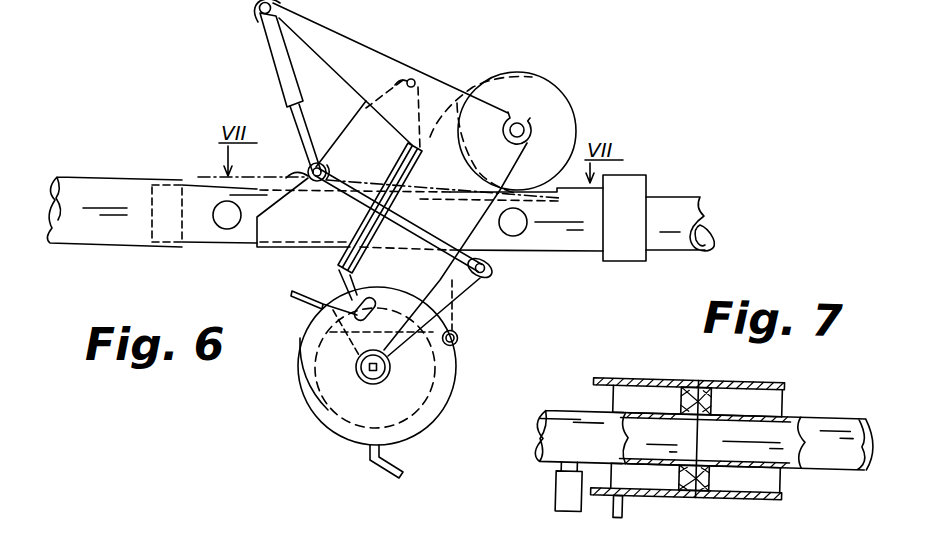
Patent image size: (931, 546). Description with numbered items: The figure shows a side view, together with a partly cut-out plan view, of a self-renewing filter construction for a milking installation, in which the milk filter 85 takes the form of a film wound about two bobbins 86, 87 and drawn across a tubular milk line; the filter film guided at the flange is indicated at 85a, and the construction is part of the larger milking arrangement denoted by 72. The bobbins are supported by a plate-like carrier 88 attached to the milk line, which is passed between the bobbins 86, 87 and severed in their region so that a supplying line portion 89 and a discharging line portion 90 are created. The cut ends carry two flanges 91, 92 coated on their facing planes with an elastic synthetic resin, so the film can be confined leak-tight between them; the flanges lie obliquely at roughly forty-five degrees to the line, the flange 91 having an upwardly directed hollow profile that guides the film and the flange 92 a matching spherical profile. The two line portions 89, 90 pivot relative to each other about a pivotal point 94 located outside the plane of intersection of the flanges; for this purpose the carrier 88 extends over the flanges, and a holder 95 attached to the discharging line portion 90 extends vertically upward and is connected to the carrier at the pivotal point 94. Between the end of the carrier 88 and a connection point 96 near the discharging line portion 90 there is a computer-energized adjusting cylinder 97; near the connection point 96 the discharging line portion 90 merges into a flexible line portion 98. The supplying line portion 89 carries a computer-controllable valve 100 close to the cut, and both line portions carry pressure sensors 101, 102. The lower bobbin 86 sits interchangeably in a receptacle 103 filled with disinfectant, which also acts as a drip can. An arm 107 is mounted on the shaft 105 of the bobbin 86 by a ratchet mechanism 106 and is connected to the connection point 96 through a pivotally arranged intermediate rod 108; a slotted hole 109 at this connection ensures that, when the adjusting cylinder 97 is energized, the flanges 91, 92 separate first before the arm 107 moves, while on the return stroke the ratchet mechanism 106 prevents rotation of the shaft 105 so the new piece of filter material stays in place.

In FIG. 6, the frame member 72 is at (496, 5).
In FIG. 6, the milk filter 85 is at (420, 45).
In FIG. 6, the hook 85a is at (528, 74).
In FIG. 6, the lower bobbin 86 is at (313, 422).
In FIG. 6, the bobbin 87 is at (558, 92).
In FIG. 6, the plate-like carrier 88 is at (458, 92).
In FIG. 7, the plate-like carrier 88 is at (757, 495).
In FIG. 6, the supplying milk line portion 89 is at (708, 205).
In FIG. 7, the supplying milk line portion 89 is at (849, 412).
In FIG. 6, the discharging line portion 90 is at (200, 178).
In FIG. 7, the discharging line portion 90 is at (566, 412).
In FIG. 6, the flange 91 is at (360, 275).
In FIG. 7, the flange 91 is at (698, 384).
In FIG. 6, the flange 92 is at (334, 268).
In FIG. 7, the flange 92 is at (680, 397).
In FIG. 6, the pivotal point 94 is at (405, 79).
In FIG. 6, the holder 95 is at (363, 134).
In FIG. 6, the connection point 96 is at (305, 177).
In FIG. 7, the connection point 96 is at (626, 508).
In FIG. 6, the adjusting cylinder 97 is at (273, 71).
In FIG. 6, the flexible line portion 98 is at (110, 178).
In FIG. 6, the computer-controllable valve 100 is at (637, 176).
In FIG. 6, the pressure sensor 101 is at (527, 230).
In FIG. 6, the pressure sensor 102 is at (213, 223).
In FIG. 7, the pressure sensor 102 is at (557, 499).
In FIG. 6, the receptacle 103 is at (298, 343).
In FIG. 6, the shaft 105 is at (358, 368).
In FIG. 6, the ratchet mechanism 106 is at (371, 382).
In FIG. 6, the arm 107 is at (400, 368).
In FIG. 6, the intermediate rod 108 is at (412, 230).
In FIG. 6, the slotted hole 109 is at (493, 280).